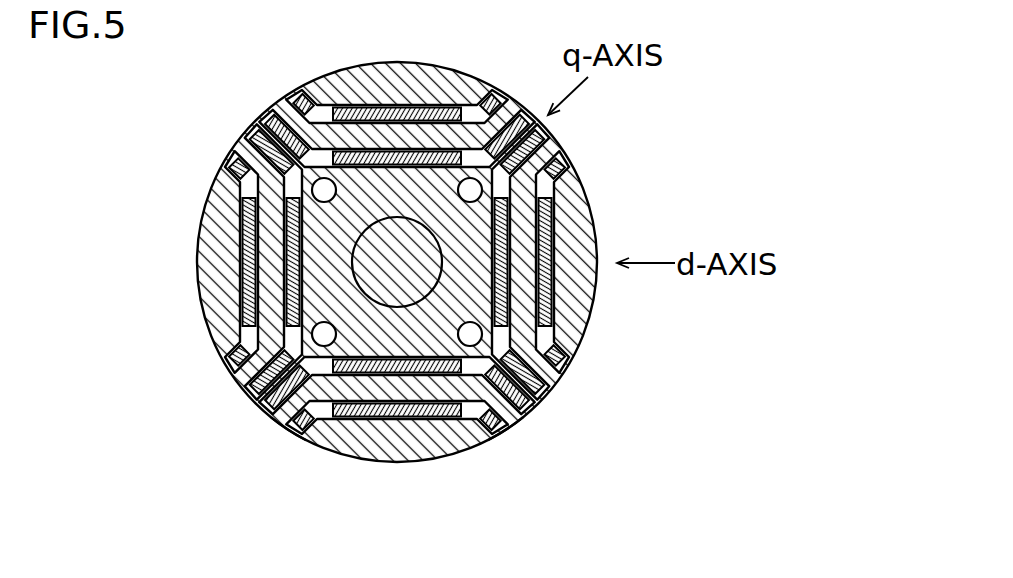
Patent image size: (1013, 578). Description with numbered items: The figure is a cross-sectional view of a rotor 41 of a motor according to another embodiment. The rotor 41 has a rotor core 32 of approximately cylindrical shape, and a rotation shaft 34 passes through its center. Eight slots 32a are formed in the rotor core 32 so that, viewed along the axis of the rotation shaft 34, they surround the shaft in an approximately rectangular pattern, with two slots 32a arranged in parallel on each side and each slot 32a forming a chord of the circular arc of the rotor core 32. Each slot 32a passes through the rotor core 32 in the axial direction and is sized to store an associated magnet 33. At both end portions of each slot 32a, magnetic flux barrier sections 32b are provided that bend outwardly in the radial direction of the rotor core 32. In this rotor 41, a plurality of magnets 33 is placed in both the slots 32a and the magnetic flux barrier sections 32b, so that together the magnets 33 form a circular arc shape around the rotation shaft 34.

The rotor core 32 is at (402, 440).
The slot 32a is at (468, 413).
The magnetic flux barrier section 32b is at (288, 428).
The magnet 33 is at (550, 307).
The rotation shaft 34 is at (400, 247).
The rotor 41 is at (582, 186).